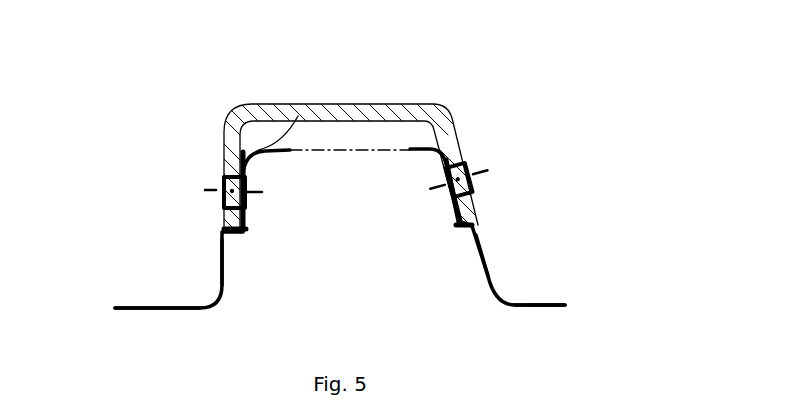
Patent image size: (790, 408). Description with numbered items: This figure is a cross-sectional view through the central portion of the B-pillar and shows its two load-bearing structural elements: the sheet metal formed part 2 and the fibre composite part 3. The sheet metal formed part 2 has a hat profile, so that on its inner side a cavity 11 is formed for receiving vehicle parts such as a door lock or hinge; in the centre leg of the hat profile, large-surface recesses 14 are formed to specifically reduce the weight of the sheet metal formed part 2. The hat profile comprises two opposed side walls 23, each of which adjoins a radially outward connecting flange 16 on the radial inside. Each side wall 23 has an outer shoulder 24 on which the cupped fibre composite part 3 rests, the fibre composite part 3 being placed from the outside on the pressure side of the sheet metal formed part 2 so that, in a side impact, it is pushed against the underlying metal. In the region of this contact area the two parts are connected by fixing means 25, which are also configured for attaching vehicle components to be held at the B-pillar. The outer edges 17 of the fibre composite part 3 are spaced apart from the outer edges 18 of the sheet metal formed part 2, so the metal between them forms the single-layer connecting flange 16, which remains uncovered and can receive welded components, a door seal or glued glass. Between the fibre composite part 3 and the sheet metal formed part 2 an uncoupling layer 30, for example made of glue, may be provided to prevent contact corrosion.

The sheet metal formed part 2 is at (492, 267).
The fibre composite part 3 is at (418, 100).
The cavity 11 is at (357, 272).
The large-surface recesses 14 is at (353, 153).
The connecting flange 16 is at (158, 306).
The outer edges of the fibre composite part 17 is at (222, 220).
The outer edges of the sheet metal formed part 18 is at (115, 307).
The side walls 23 is at (225, 268).
The outer shoulder 24 is at (237, 237).
The fixing means 25 is at (223, 176).
The uncoupling layer 30 is at (298, 116).